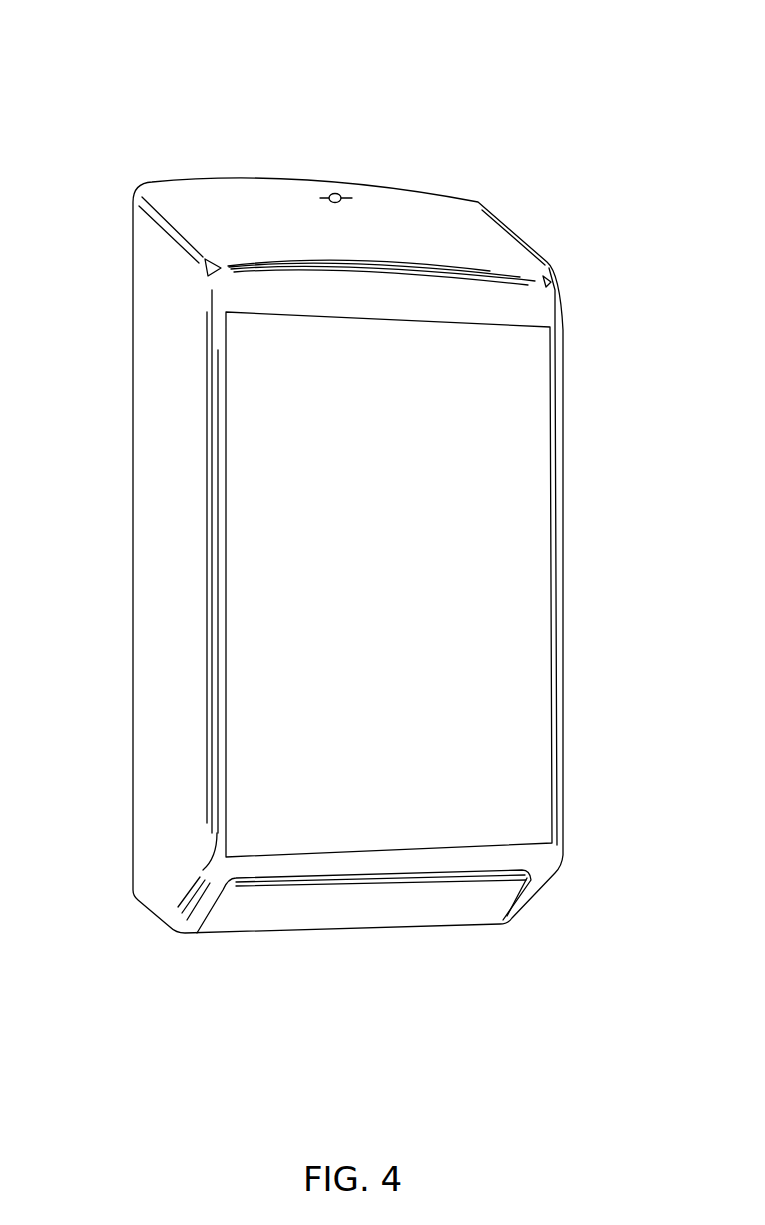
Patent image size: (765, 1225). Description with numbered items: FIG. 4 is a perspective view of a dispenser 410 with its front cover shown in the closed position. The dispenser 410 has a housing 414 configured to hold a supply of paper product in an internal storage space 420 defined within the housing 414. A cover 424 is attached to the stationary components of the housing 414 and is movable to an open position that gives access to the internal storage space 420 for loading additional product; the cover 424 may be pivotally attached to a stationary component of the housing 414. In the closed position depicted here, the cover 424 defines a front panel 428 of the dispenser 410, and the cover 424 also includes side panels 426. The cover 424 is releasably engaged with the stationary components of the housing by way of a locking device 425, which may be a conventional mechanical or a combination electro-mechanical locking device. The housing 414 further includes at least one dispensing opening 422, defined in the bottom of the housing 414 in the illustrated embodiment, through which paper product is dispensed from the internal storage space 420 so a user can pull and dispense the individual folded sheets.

The dispenser 410 is at (530, 86).
The housing 414 is at (557, 283).
The internal storage space 420 is at (165, 723).
The dispensing opening 422 is at (226, 944).
The cover 424 is at (216, 196).
The locking device 425 is at (336, 194).
The side panels 426 is at (148, 492).
The front panel 428 is at (540, 422).